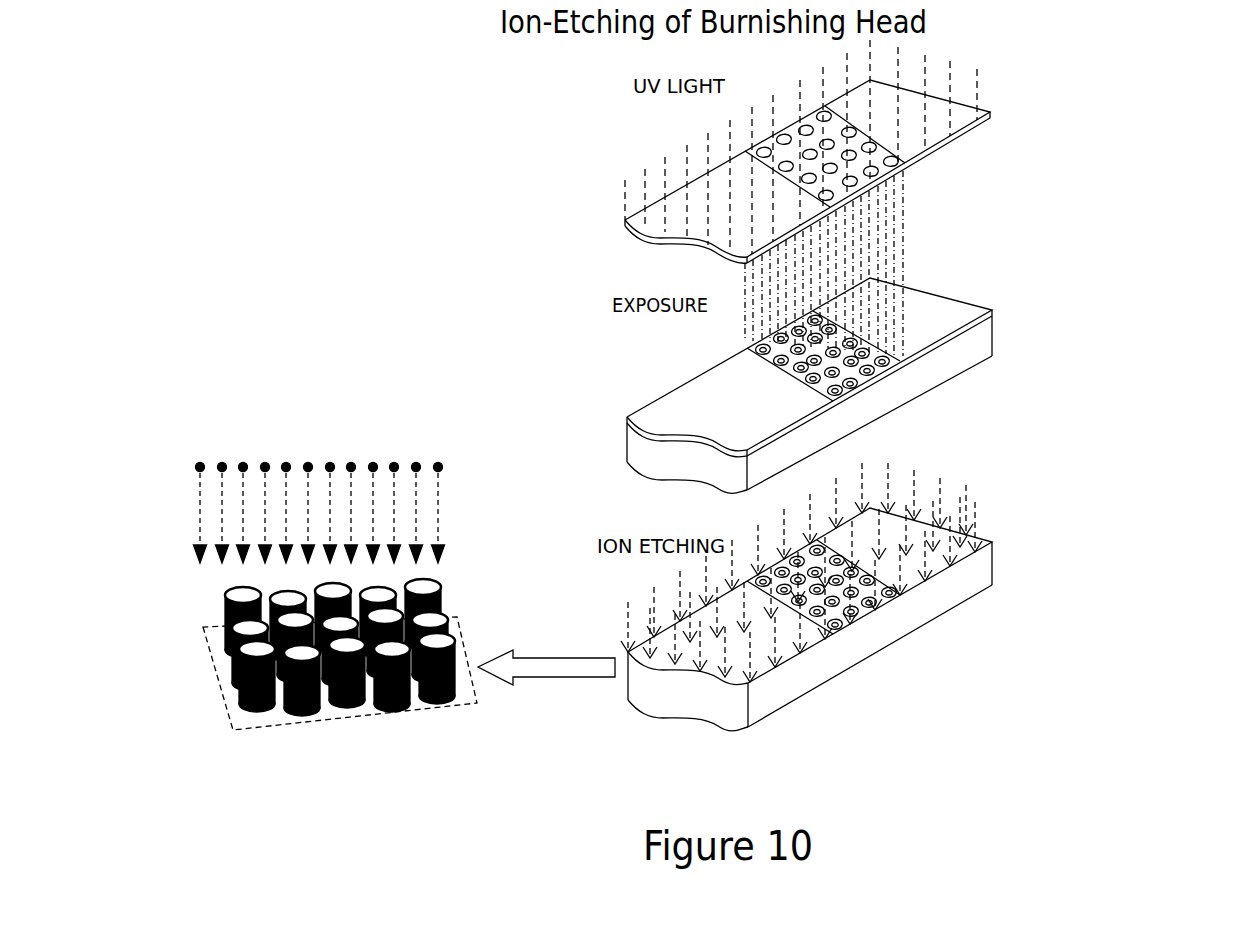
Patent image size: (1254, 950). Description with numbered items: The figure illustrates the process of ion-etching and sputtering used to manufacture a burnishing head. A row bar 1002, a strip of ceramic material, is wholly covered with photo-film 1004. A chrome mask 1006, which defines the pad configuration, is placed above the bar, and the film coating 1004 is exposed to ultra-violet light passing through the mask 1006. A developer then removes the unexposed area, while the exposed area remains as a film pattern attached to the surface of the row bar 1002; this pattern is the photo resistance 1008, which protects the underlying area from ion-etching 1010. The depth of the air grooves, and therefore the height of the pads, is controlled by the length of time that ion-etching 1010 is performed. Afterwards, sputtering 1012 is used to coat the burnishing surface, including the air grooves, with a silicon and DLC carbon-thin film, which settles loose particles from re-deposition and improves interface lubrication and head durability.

The row bar 1002 is at (970, 349).
The photo-film 1004 is at (967, 305).
The chrome mask 1006 is at (988, 102).
The photo resistance 1008 is at (850, 603).
The ion-etching 1010 is at (947, 490).
The sputtering 1012 is at (383, 492).